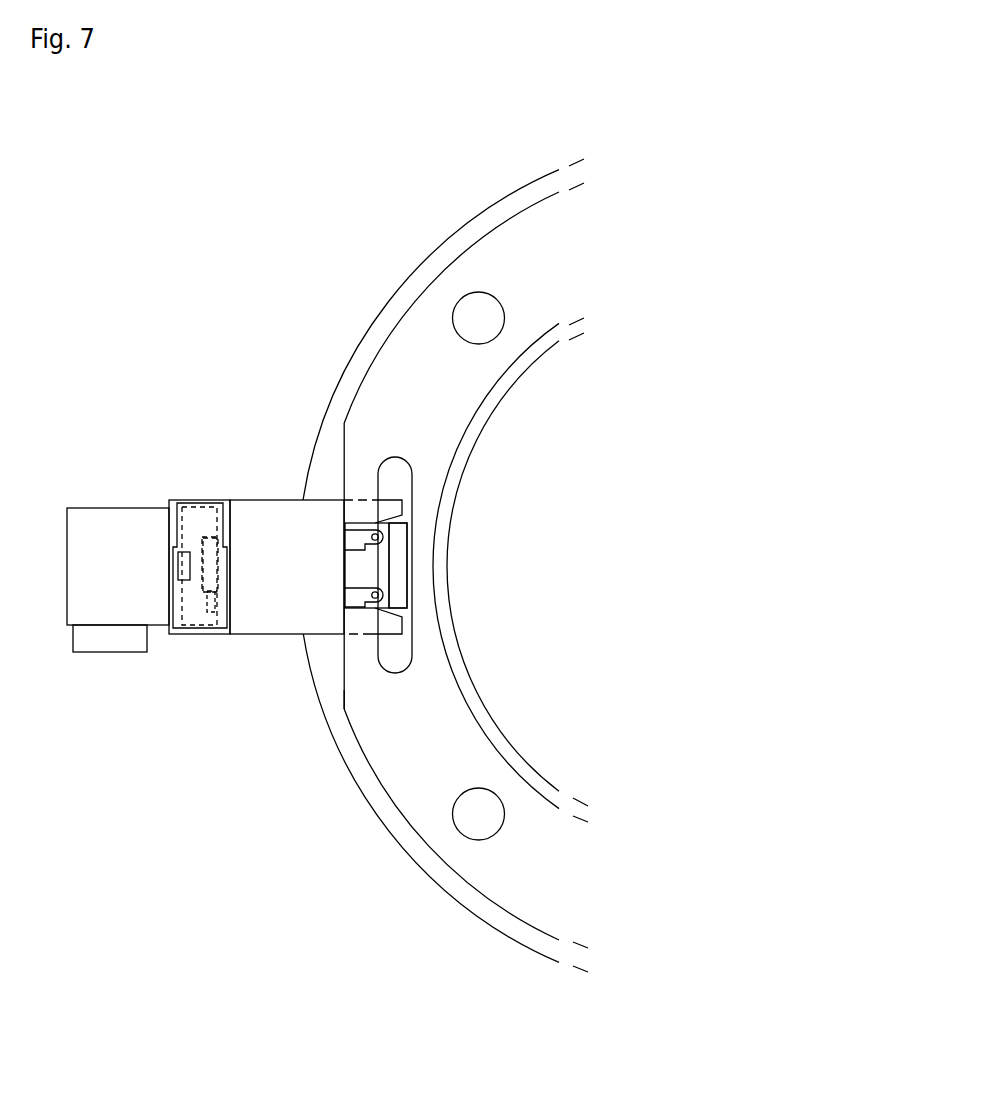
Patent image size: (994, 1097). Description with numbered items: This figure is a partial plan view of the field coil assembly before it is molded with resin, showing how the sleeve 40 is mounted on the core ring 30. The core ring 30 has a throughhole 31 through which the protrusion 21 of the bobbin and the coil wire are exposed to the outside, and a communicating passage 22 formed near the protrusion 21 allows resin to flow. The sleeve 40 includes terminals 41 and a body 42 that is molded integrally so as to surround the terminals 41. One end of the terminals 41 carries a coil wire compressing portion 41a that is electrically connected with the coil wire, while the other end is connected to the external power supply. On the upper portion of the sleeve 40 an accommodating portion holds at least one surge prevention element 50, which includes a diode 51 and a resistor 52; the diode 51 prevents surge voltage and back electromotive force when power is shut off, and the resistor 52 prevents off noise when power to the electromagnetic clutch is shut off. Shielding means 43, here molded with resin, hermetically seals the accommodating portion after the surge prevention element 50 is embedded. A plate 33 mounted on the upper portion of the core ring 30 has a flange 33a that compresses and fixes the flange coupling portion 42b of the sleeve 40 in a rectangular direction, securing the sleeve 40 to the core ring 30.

The protrusion 21 is at (355, 568).
The communicating passage 22 is at (398, 594).
The core ring 30 is at (432, 266).
The throughhole 31 is at (401, 557).
The plate 33 is at (444, 367).
The flange 33a is at (363, 637).
The sleeve 40 is at (213, 428).
The terminals 41 is at (350, 522).
The coil wire compressing portion 41a is at (368, 525).
The body 42 is at (268, 558).
The flange coupling portion 42b is at (390, 622).
The shielding means 43 is at (198, 525).
The surge prevention element 50 is at (135, 715).
The diode 51 is at (207, 594).
The resistor 52 is at (188, 578).